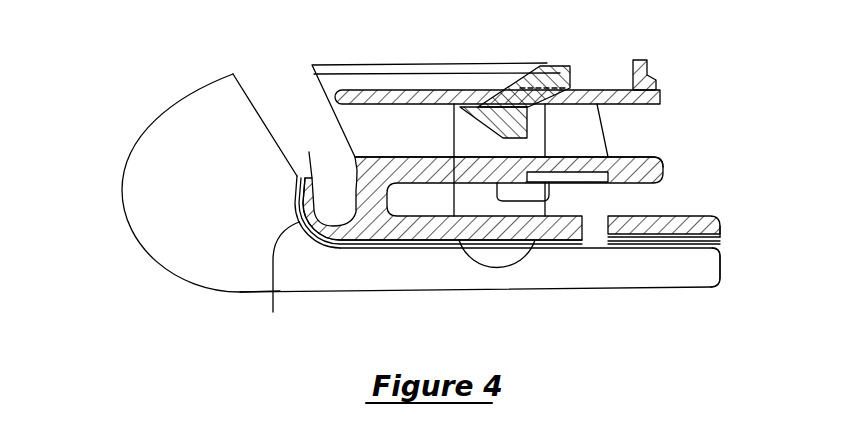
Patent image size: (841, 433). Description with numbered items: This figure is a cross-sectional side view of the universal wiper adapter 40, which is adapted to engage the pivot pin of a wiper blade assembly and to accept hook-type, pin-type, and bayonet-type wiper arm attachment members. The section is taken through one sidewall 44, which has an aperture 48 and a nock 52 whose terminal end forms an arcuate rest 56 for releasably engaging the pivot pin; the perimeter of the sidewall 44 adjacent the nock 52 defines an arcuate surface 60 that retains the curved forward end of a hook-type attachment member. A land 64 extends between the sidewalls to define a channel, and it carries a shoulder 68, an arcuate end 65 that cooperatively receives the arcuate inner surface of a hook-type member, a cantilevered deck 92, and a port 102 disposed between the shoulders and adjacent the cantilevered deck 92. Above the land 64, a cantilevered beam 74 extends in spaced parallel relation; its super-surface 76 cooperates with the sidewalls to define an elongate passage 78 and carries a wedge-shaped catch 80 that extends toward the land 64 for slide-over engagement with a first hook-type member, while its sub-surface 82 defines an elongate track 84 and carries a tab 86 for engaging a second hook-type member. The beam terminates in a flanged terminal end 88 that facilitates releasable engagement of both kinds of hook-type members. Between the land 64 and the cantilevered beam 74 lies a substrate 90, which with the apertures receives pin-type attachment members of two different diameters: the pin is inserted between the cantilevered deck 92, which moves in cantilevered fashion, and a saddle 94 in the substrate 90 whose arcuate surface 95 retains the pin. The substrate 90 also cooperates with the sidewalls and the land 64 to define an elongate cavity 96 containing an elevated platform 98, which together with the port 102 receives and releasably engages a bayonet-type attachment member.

The universal wiper adapter 40 is at (98, 78).
The nock 52 is at (242, 68).
The arcuate surface 60 is at (122, 180).
The arcuate end 65 is at (273, 312).
The sidewall 44 is at (330, 277).
The aperture 48 is at (493, 270).
The arcuate rest 56 is at (340, 196).
The substrate 90 is at (663, 162).
The elevated platform 98 is at (660, 178).
The saddle 94 is at (527, 194).
The cantilevered deck 92 is at (520, 246).
The arcuate surface 95 is at (485, 185).
The land 64 is at (623, 238).
The port 102 is at (670, 222).
The shoulder 68 is at (720, 240).
The cantilevered beam 74 is at (660, 100).
The catch 80 is at (487, 128).
The tab 86 is at (568, 66).
The elongate track 84 is at (328, 82).
The sub-surface 82 is at (600, 90).
The super-surface 76 is at (637, 104).
The elongate passage 78 is at (652, 142).
The elongate cavity 96 is at (682, 206).
The flanged terminal end 88 is at (658, 80).